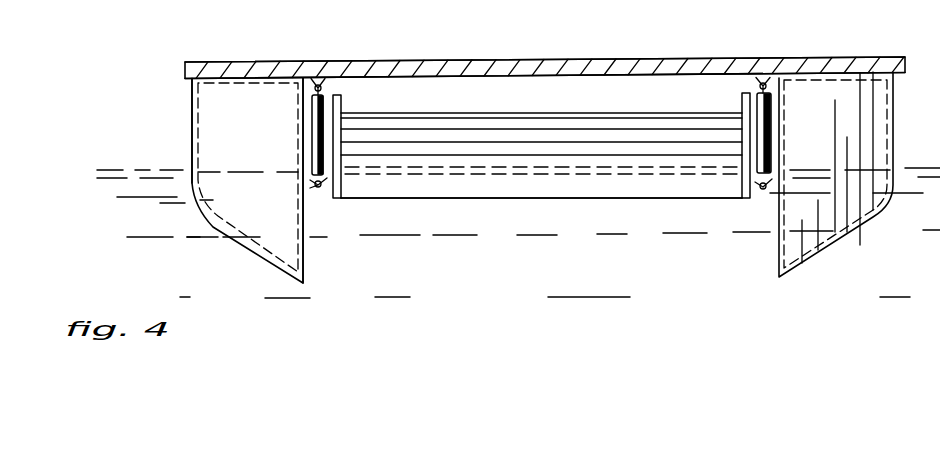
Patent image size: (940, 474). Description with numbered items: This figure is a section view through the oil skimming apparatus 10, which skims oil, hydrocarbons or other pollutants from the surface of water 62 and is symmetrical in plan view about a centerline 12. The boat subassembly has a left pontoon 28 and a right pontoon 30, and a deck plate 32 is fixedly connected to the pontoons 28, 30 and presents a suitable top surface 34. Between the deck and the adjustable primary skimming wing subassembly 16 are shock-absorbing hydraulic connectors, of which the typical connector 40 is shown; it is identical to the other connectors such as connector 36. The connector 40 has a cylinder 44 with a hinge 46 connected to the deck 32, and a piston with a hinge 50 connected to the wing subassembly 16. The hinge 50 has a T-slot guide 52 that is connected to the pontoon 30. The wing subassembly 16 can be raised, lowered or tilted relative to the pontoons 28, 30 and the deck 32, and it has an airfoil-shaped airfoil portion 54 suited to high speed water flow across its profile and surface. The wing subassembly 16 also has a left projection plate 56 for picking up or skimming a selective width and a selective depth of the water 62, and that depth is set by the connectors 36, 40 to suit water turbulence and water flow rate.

The apparatus 10 is at (712, 50).
The centerline 12 is at (581, 60).
The primary skimming wing subassembly 16 is at (474, 198).
The left pontoon 28 is at (842, 214).
The right pontoon 30 is at (206, 220).
The deck plate 32 is at (368, 70).
The top surface 34 is at (467, 62).
The connector 36 is at (770, 107).
The connector 40 is at (303, 127).
The cylinder 44 is at (315, 110).
The hinge 46 is at (321, 85).
The hinge 50 is at (320, 190).
The T-slot guide 52 is at (311, 182).
The airfoil portion 54 is at (562, 180).
The left projection plate 56 is at (742, 157).
The water 62 is at (657, 212).